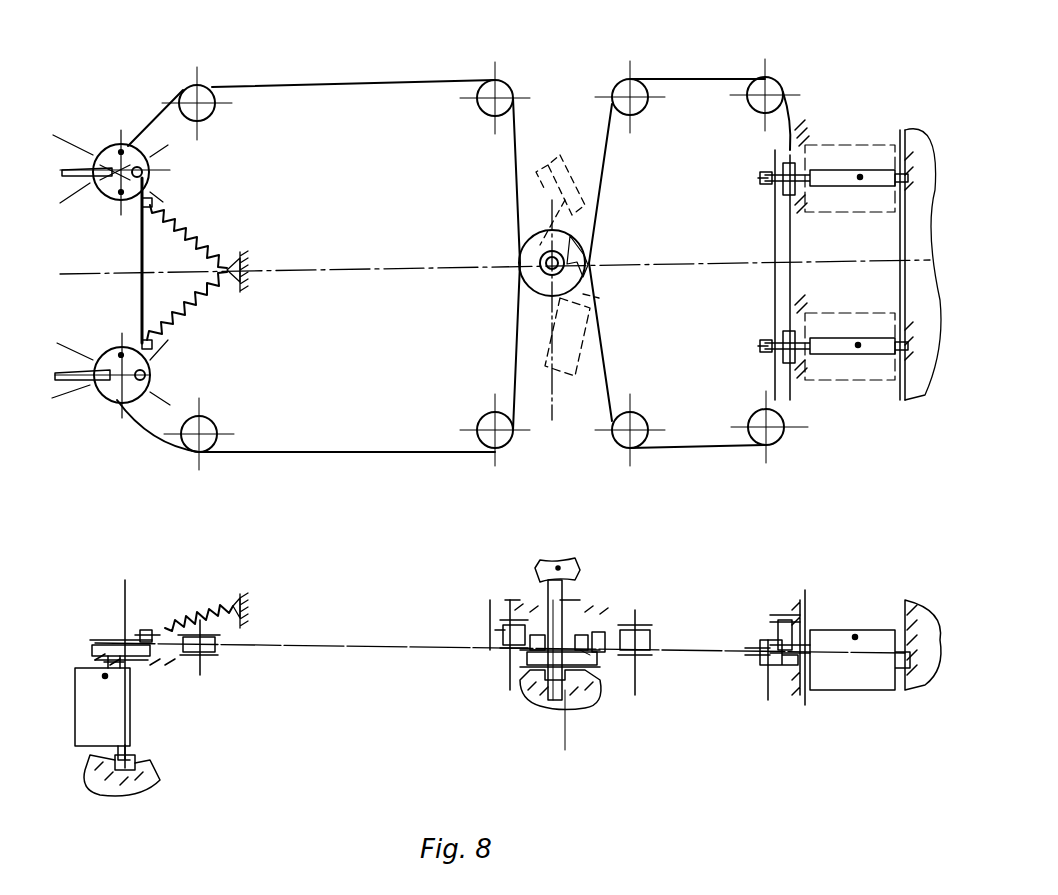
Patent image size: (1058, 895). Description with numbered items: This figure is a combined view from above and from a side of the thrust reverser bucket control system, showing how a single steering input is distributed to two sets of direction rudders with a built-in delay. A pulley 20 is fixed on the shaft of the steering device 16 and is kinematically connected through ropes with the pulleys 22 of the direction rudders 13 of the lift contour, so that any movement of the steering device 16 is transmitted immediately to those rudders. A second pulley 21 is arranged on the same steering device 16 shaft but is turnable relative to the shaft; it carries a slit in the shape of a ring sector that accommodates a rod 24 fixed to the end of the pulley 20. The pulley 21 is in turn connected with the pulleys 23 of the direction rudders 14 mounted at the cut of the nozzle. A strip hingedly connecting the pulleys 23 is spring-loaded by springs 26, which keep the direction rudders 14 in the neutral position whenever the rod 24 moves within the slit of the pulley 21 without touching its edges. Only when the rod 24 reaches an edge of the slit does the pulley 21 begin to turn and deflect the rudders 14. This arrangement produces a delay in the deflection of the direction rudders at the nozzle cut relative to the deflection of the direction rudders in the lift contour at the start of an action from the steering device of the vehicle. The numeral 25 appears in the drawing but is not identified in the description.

The direction rudders of the lift contour 13 is at (855, 637).
The direction rudders mounted at the cut of the nozzle 14 is at (78, 378).
The steering device 16 is at (553, 570).
The pulley 20 is at (523, 682).
The pulley 21 is at (545, 652).
The pulleys 22 is at (795, 330).
The pulleys 23 is at (209, 290).
The rod 24 is at (588, 647).
The tension wheel 25 is at (575, 246).
The springs 26 is at (235, 607).